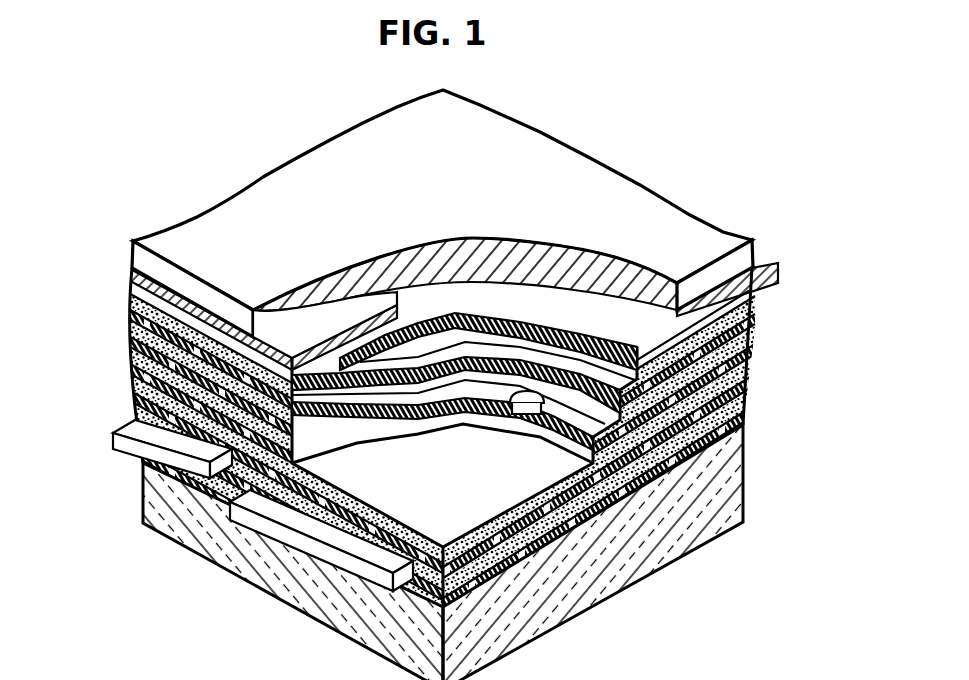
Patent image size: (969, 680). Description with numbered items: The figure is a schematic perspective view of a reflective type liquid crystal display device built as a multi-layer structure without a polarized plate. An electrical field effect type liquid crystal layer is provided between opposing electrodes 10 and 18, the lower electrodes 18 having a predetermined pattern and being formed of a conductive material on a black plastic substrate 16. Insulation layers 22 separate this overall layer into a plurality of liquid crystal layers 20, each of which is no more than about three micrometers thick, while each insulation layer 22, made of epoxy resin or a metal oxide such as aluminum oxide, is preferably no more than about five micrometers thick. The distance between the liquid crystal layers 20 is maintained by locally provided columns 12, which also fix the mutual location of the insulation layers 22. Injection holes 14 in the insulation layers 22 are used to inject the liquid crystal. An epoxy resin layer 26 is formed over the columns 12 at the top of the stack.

The opposing electrode 10 is at (757, 272).
The column 12 is at (358, 440).
The injection hole 14 is at (490, 417).
The black plastic substrate 16 is at (748, 491).
The lower electrode 18 is at (116, 432).
The liquid crystal layer 20 is at (748, 320).
The insulation layer 22 is at (748, 350).
The epoxy resin layer 26 is at (687, 230).